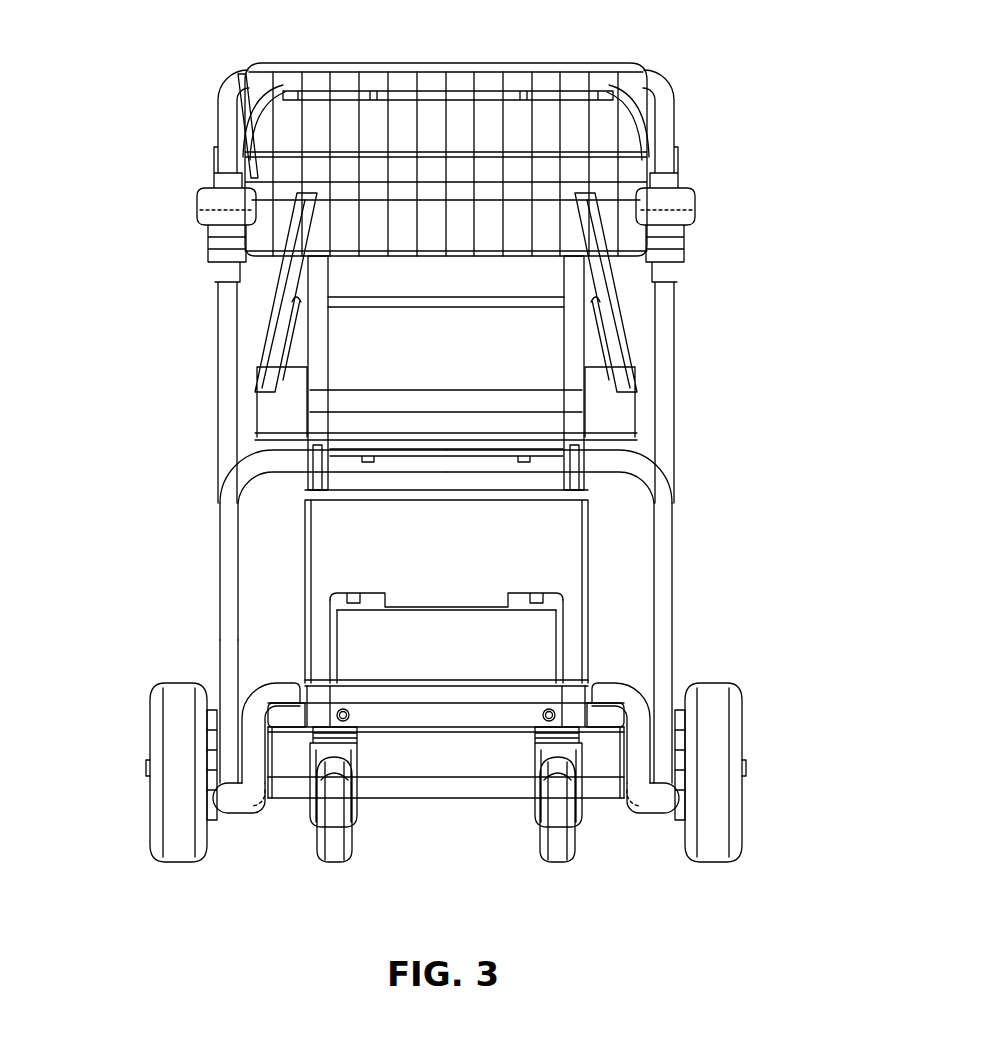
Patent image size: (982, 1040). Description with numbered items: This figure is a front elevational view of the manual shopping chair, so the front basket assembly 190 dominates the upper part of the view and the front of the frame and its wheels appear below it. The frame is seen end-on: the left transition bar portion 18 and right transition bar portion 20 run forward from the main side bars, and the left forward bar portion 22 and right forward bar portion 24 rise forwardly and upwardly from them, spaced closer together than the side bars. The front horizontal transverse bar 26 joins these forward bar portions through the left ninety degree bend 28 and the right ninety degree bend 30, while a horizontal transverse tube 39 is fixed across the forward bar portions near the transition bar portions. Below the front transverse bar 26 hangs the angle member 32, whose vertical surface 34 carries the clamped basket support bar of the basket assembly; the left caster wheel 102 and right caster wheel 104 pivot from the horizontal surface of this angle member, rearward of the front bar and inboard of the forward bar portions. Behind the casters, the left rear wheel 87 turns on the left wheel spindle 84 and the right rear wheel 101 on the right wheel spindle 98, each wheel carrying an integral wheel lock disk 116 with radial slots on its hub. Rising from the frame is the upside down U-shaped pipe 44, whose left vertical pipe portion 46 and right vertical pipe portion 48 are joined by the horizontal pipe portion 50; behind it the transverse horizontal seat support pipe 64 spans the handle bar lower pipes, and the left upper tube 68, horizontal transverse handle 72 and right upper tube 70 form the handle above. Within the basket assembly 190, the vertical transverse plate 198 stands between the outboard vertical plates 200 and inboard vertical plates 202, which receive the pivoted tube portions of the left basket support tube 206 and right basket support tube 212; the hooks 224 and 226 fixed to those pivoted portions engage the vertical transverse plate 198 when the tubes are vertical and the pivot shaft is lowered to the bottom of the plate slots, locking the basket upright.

The horizontal transverse handle 72 is at (436, 63).
The front basket assembly 190 is at (243, 92).
The right upper tube 70 is at (217, 130).
The left upper tube 68 is at (680, 160).
The right basket support tube 212 is at (330, 347).
The left basket support tube 206 is at (563, 347).
The hook 226 is at (313, 480).
The hook 224 is at (582, 480).
The transverse horizontal seat support pipe 64 is at (235, 460).
The horizontal pipe portion 50 is at (616, 489).
The upside down U-shaped pipe 44 is at (219, 526).
The right vertical pipe portion 48 is at (219, 581).
The left vertical pipe portion 46 is at (676, 541).
The outboard vertical plate 200 is at (305, 582).
The vertical transverse plate 198 is at (422, 600).
The inboard vertical plate 202 is at (338, 640).
The front horizontal transverse bar 26 is at (472, 688).
The vertical surface 34 is at (290, 712).
The angle member 32 is at (600, 712).
The right forward bar portion 24 is at (265, 760).
The left forward bar portion 22 is at (627, 760).
The horizontal transverse tube 39 is at (468, 798).
The right ninety degree bend 30 is at (268, 688).
The left ninety degree bend 28 is at (626, 690).
The right transition bar portion 20 is at (230, 814).
The left transition bar portion 18 is at (648, 814).
The right rear wheel 101 is at (149, 828).
The right wheel spindle 98 is at (149, 770).
The wheel lock disk 116 is at (213, 818).
The left rear wheel 87 is at (746, 828).
The left wheel spindle 84 is at (746, 770).
The right caster wheel 104 is at (333, 863).
The left caster wheel 102 is at (557, 863).